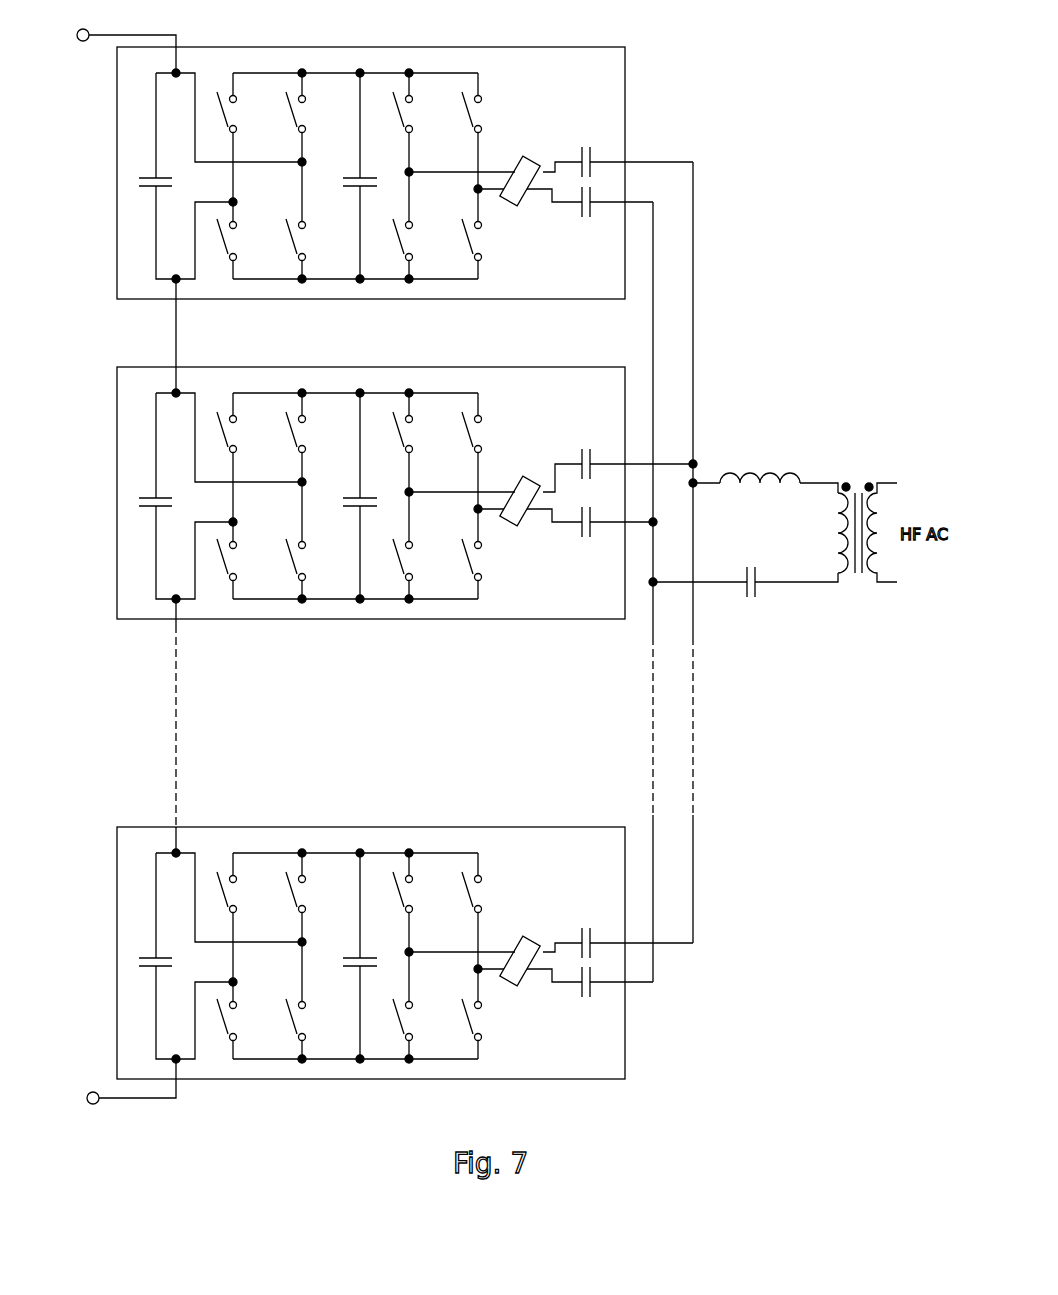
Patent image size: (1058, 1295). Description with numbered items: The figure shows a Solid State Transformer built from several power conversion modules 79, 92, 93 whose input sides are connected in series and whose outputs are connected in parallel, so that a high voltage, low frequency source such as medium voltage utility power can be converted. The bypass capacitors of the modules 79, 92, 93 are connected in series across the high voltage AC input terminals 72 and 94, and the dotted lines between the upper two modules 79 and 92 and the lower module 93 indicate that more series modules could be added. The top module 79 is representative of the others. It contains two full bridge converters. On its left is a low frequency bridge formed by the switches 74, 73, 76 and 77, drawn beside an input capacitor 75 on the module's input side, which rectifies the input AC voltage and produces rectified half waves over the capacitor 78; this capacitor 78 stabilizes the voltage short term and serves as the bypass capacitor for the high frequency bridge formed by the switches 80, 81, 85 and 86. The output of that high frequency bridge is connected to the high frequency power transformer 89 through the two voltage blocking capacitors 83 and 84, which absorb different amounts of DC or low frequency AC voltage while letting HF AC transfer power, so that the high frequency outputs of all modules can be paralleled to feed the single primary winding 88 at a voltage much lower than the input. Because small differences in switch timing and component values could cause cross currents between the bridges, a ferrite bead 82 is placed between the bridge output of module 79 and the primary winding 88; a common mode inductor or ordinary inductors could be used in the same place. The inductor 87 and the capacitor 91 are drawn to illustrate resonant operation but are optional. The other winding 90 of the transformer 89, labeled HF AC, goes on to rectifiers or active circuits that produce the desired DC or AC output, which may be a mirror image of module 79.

The high voltage input terminal 72 is at (97, 47).
The switch 73 is at (292, 93).
The switch 74 is at (225, 127).
The input capacitor 75 is at (147, 192).
The switch 76 is at (223, 251).
The switch 77 is at (292, 252).
The capacitor 78 is at (350, 193).
The power conversion module 79 is at (471, 172).
The switch 80 is at (420, 113).
The switch 81 is at (488, 113).
The ferrite bead 82 is at (530, 148).
The voltage blocking capacitor 83 is at (597, 150).
The voltage blocking capacitor 84 is at (595, 210).
The switch 85 is at (418, 238).
The switch 86 is at (487, 238).
The inductor 87 is at (738, 468).
The transformer primary winding 88 is at (837, 523).
The high frequency power transformer 89 is at (857, 477).
The winding 90 is at (888, 525).
The capacitor 91 is at (760, 595).
The power conversion module 92 is at (513, 633).
The power conversion module 93 is at (608, 1093).
The high voltage input terminal 94 is at (112, 1090).